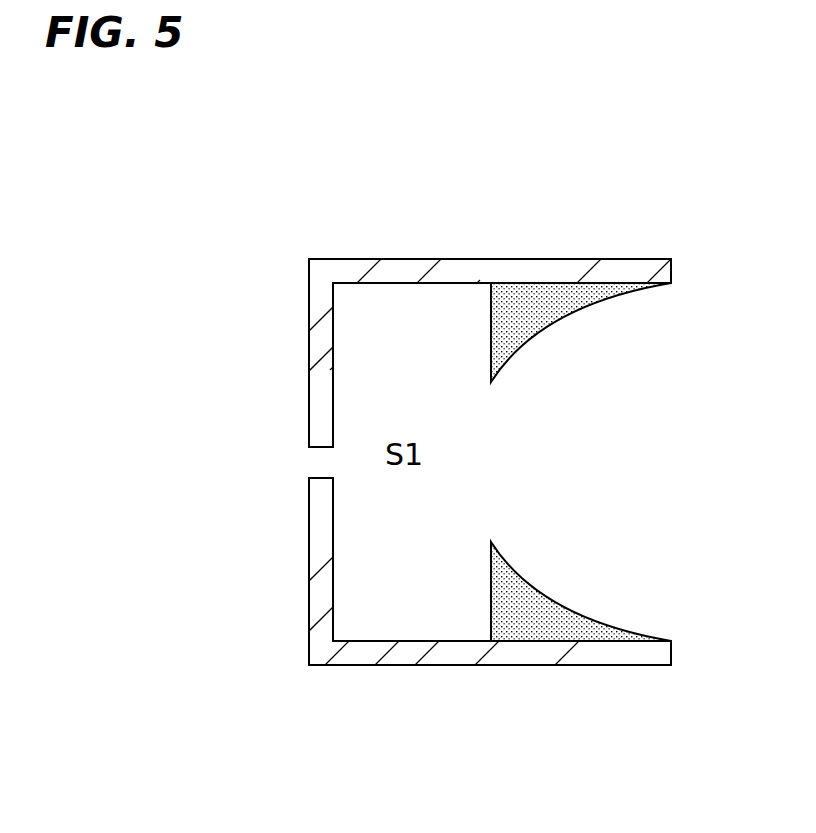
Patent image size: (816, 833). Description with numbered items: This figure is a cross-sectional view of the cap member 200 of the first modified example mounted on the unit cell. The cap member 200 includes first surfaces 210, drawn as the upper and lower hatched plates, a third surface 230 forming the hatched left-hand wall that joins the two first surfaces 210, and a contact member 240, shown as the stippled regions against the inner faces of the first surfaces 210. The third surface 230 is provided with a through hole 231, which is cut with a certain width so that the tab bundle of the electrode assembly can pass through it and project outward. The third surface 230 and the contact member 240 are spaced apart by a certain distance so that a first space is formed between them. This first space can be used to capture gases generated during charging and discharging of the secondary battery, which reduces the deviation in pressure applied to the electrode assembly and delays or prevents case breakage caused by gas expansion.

The cap member 200 is at (490, 499).
The first surfaces 210 is at (508, 268).
The third surface 230 is at (314, 325).
The through hole 231 is at (317, 463).
The contact member 240 is at (539, 308).